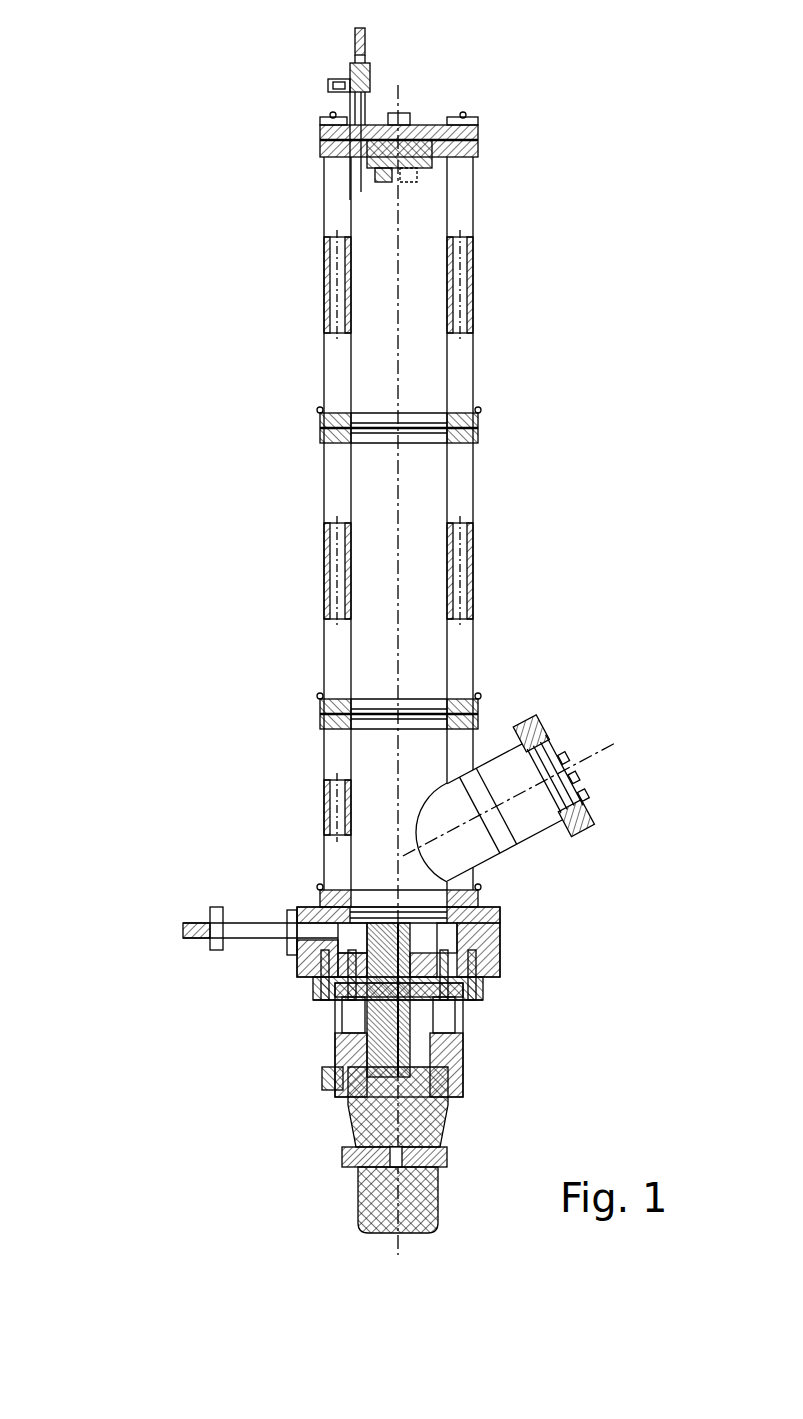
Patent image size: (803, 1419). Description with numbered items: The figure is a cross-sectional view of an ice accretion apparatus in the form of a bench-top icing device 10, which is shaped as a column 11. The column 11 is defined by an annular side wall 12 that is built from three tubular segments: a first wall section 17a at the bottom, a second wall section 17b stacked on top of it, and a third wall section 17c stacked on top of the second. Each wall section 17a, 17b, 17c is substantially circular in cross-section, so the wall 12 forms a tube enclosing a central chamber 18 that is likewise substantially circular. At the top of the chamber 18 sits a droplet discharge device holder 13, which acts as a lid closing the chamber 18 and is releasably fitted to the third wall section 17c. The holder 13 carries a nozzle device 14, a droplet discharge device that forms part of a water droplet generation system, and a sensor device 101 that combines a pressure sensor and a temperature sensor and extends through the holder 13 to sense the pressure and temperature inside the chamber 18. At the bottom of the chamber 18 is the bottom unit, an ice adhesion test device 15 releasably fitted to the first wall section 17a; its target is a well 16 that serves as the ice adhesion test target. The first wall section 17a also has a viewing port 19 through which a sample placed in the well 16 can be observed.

The bench-top icing device 10 is at (92, 83).
The sensor device 101 is at (355, 103).
The column 11 is at (474, 352).
The side wall 12 is at (478, 392).
The droplet discharge device holder 13 is at (422, 127).
The nozzle device 14 is at (424, 158).
The ice adhesion test device 15 is at (500, 915).
The well 16 is at (440, 928).
The first wall section 17a is at (475, 750).
The second wall section 17b is at (474, 563).
The third wall section 17c is at (474, 222).
The central chamber 18 is at (426, 489).
The viewing port 19 is at (557, 770).